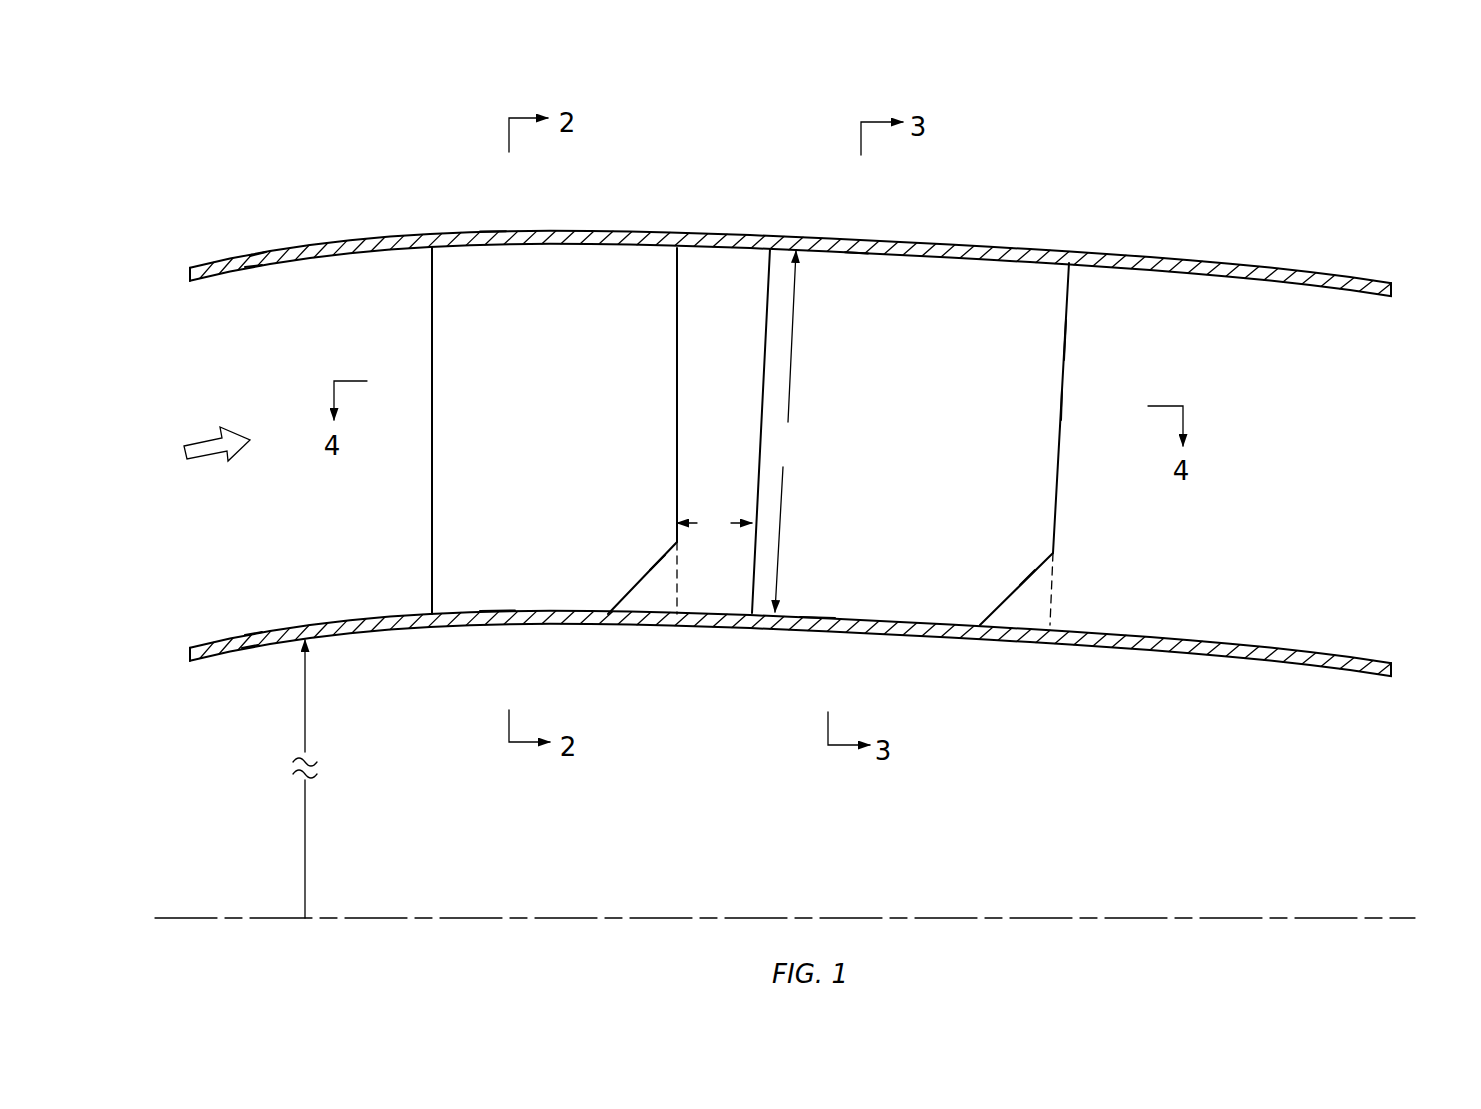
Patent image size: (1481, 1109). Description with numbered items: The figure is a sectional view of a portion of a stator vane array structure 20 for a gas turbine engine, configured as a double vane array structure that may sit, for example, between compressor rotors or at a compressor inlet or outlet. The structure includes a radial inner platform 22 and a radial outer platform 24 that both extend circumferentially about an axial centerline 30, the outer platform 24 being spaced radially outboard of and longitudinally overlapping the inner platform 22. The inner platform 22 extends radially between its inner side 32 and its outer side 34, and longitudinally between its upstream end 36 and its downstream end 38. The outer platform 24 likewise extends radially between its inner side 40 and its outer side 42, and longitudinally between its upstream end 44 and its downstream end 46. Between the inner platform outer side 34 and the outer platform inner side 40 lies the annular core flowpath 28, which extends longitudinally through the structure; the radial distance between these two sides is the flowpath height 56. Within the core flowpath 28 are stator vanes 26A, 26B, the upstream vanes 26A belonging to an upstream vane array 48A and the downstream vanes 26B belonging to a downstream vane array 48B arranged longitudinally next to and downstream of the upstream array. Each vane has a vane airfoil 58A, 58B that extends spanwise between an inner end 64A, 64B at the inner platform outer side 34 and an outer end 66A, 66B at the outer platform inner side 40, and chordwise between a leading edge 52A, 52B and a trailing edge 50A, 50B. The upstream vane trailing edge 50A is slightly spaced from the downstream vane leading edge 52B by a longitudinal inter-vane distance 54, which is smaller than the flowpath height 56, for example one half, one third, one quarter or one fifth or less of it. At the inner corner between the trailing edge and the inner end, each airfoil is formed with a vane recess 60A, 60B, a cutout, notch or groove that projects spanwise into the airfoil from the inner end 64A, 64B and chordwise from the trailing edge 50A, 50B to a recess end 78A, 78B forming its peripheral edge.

The stator vane array structure 20 is at (178, 136).
The radial inner platform 22 is at (222, 665).
The radial outer platform 24 is at (208, 256).
The upstream stator vane 26A is at (426, 321).
The downstream stator vane 26B is at (1070, 339).
The core flowpath 28 is at (242, 466).
The axial centerline 30 is at (163, 915).
The inner side of the inner platform 32 is at (250, 647).
The outer side of the inner platform 34 is at (253, 630).
The upstream end of the inner platform 36 is at (190, 656).
The downstream end of the inner platform 38 is at (1395, 672).
The inner side of the outer platform 40 is at (253, 263).
The outer side of the outer platform 42 is at (258, 246).
The upstream end of the outer platform 44 is at (196, 277).
The downstream end of the outer platform 46 is at (1395, 291).
The upstream vane array 48A is at (418, 536).
The downstream vane array 48B is at (1070, 498).
The trailing edge of the upstream vane 50A is at (680, 384).
The trailing edge of the downstream vane 50B is at (1065, 400).
The leading edge of the upstream vane 52A is at (430, 381).
The leading edge of the downstream vane 52B is at (762, 379).
The longitudinal inter-vane distance 54 is at (714, 523).
The flowpath height 56 is at (785, 431).
The upstream vane airfoil 58A is at (525, 440).
The downstream vane airfoil 58B is at (920, 440).
The upstream vane recess 60A is at (650, 592).
The downstream vane recess 60B is at (1026, 607).
The inner end of the upstream vane airfoil 64A is at (498, 627).
The inner end of the downstream vane airfoil 64B is at (818, 633).
The outer end of the upstream vane airfoil 66A is at (493, 236).
The outer end of the downstream vane airfoil 66B is at (855, 247).
The end of the upstream vane recess 78A is at (655, 568).
The end of the downstream vane recess 78B is at (1030, 578).